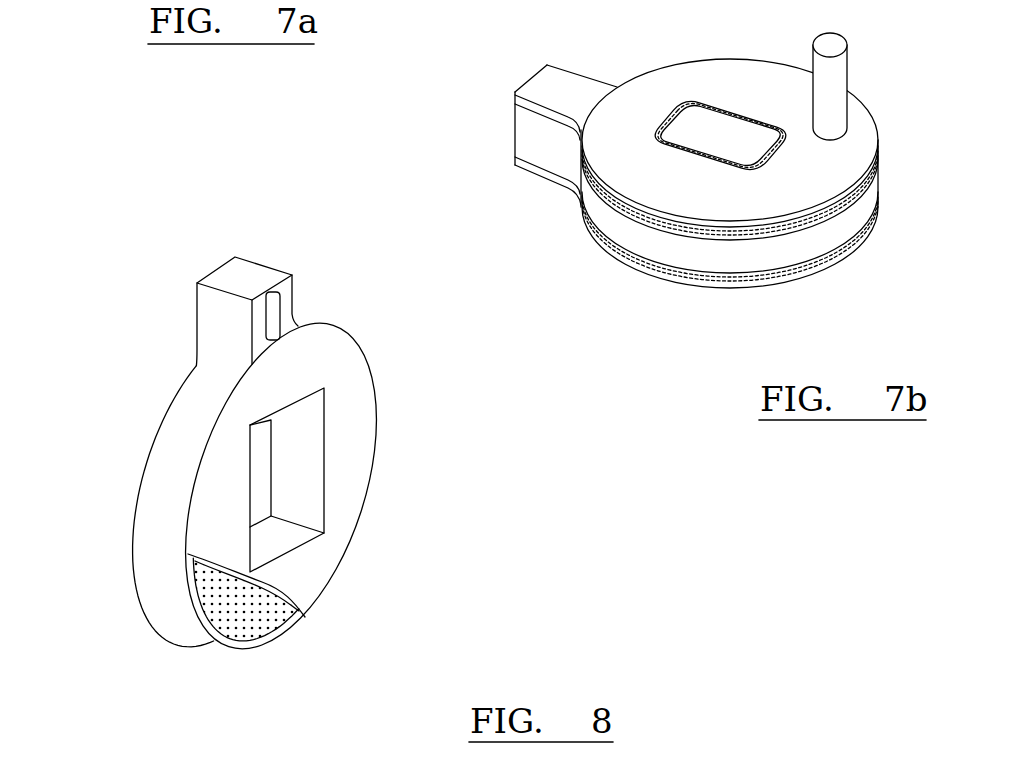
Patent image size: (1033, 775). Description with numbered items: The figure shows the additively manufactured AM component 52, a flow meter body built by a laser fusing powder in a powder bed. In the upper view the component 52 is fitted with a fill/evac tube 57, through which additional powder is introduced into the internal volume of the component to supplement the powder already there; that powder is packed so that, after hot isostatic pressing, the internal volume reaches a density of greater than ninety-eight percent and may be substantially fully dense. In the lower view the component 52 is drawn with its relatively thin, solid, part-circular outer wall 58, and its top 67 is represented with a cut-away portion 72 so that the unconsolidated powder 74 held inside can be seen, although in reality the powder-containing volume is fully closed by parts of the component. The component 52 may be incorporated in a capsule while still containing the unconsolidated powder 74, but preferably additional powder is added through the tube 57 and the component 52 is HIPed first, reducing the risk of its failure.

In FIG. 7b, the AM component 52 is at (633, 289).
In FIG. 8, the AM component 52 is at (277, 497).
In FIG. 7b, the fill/evac tube 57 is at (840, 73).
In FIG. 8, the outer wall 58 is at (213, 388).
In FIG. 8, the top 67 is at (342, 409).
In FIG. 8, the cut-away portion 72 is at (279, 640).
In FIG. 8, the unconsolidated powder 74 is at (230, 608).